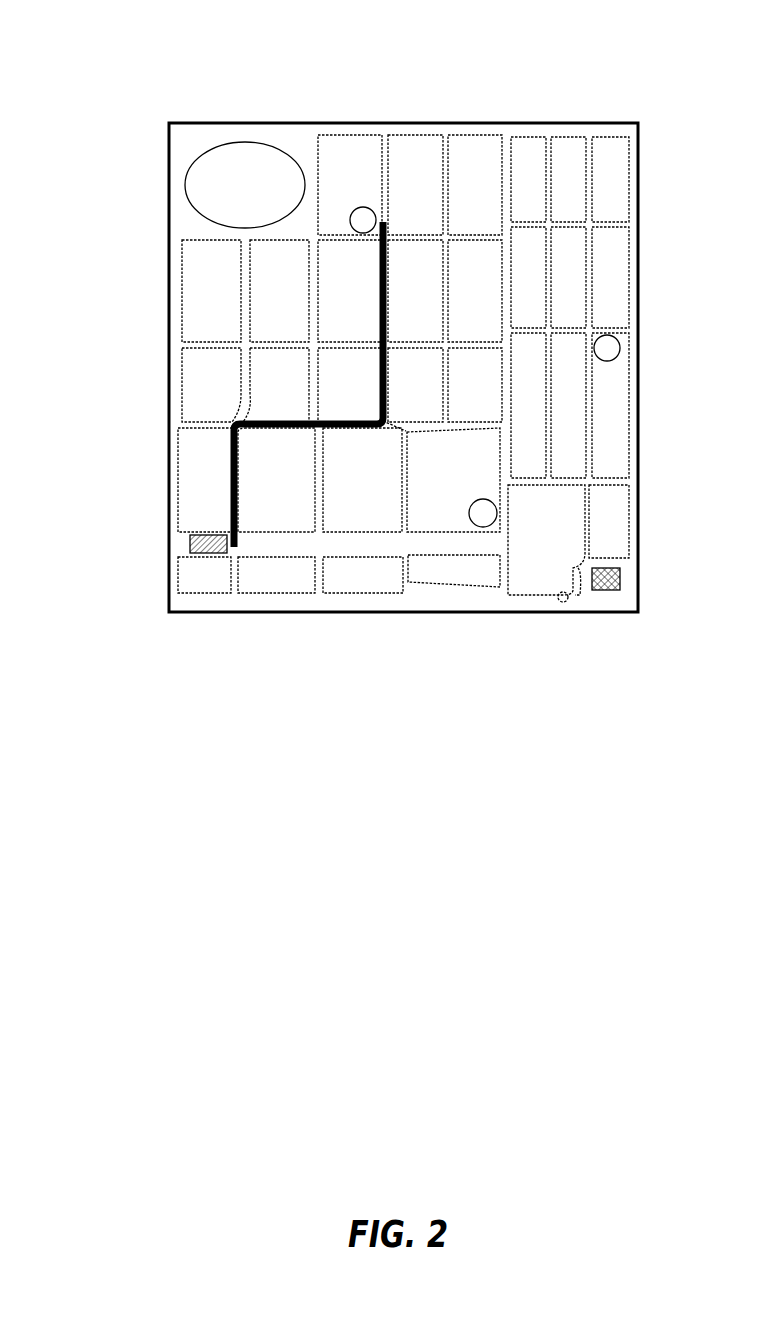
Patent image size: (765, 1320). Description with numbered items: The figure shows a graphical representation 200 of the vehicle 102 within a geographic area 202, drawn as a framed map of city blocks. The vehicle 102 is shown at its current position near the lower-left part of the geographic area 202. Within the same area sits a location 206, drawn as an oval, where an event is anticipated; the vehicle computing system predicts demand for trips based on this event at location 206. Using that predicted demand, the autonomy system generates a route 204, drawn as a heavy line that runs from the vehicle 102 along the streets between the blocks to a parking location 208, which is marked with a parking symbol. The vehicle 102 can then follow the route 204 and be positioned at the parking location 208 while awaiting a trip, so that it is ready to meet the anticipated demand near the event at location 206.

The graphical representation 200 is at (127, 45).
The geographic area 202 is at (540, 114).
The route 204 is at (378, 302).
The location 206 is at (185, 196).
The parking location 208 is at (386, 220).
The vehicle 102 is at (190, 545).